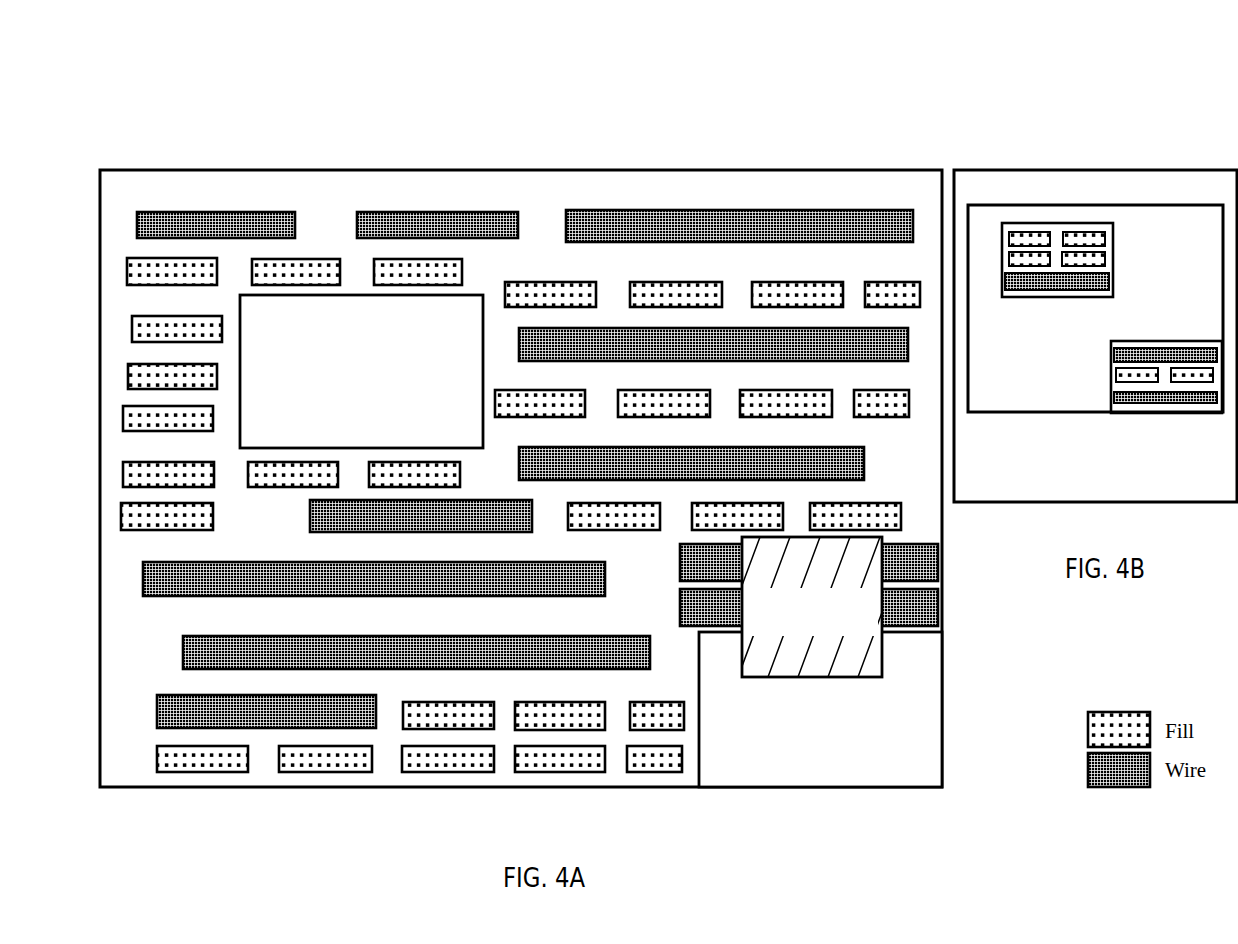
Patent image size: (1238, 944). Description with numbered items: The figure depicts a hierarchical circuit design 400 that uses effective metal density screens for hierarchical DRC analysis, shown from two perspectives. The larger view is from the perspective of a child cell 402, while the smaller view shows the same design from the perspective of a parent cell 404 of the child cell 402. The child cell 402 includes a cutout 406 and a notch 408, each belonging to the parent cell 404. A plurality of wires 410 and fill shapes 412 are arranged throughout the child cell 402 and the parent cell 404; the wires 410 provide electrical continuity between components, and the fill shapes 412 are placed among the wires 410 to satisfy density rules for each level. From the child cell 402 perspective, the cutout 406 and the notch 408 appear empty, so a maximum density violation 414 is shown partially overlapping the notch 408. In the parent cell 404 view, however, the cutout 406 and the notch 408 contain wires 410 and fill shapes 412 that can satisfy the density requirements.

In FIG. 4A, the hierarchical circuit design 400 is at (134, 36).
In FIG. 4A, the child cell 402 is at (500, 170).
In FIG. 4B, the child cell 402 is at (1023, 205).
In FIG. 4B, the parent cell 404 is at (1106, 170).
In FIG. 4A, the cutout 406 is at (378, 346).
In FIG. 4B, the cutout 406 is at (1115, 259).
In FIG. 4A, the notch 408 is at (836, 707).
In FIG. 4B, the notch 408 is at (1112, 361).
In FIG. 4A, the wire 410 is at (137, 217).
In FIG. 4A, the fill shape 412 is at (128, 268).
In FIG. 4A, the maximum density violation 414 is at (880, 652).